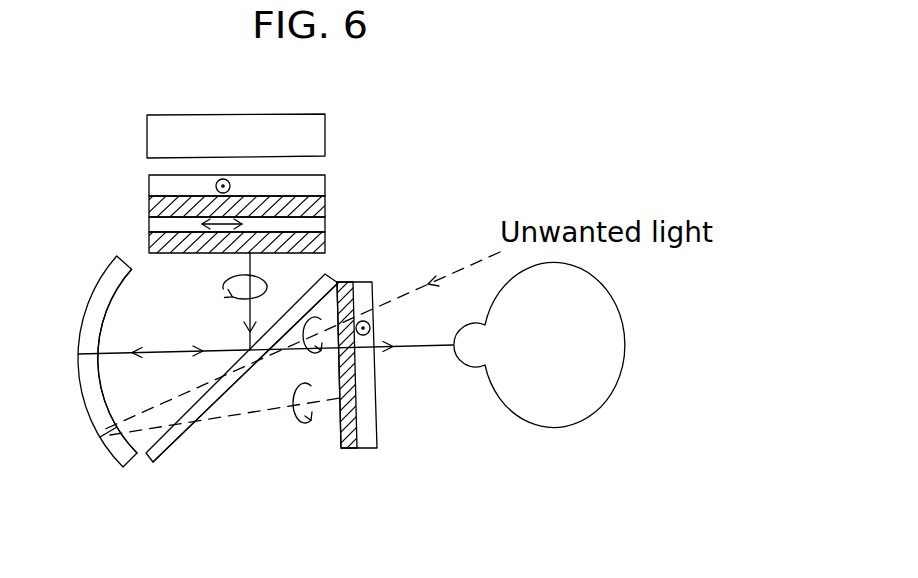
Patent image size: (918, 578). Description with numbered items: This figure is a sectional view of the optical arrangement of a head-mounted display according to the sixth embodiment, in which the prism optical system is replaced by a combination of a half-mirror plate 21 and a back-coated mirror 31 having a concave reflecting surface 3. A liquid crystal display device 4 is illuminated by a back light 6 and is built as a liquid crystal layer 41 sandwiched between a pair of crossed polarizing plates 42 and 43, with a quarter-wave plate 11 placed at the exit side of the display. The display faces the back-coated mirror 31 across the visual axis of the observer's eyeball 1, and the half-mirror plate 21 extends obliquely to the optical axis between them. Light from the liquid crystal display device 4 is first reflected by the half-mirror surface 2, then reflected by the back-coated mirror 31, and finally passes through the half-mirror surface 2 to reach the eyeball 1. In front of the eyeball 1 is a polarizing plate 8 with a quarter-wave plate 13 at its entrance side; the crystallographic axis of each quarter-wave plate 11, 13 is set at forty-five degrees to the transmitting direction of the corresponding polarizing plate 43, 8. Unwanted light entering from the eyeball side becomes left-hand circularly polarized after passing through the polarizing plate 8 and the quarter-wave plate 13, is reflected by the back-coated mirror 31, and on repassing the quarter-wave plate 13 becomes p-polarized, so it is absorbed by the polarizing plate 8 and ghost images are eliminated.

The eyeball 1 is at (563, 412).
The half-mirror surface 2 is at (242, 396).
The concave reflecting surface 3 is at (86, 387).
The liquid crystal display device 4 is at (281, 201).
The back light 6 is at (323, 136).
The polarizing plate 8 is at (357, 390).
The quarter-wave plate 11 is at (323, 243).
The quarter-wave plate 13 is at (350, 447).
The half-mirror plate 21 is at (167, 447).
The back-coated mirror 31 is at (118, 448).
The liquid crystal layer 41 is at (323, 203).
The polarizing plate 42 is at (323, 182).
The polarizing plate 43 is at (266, 226).